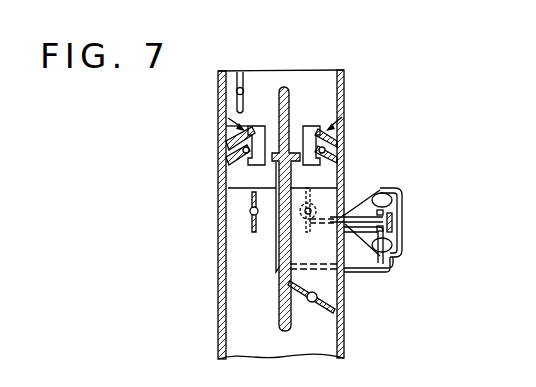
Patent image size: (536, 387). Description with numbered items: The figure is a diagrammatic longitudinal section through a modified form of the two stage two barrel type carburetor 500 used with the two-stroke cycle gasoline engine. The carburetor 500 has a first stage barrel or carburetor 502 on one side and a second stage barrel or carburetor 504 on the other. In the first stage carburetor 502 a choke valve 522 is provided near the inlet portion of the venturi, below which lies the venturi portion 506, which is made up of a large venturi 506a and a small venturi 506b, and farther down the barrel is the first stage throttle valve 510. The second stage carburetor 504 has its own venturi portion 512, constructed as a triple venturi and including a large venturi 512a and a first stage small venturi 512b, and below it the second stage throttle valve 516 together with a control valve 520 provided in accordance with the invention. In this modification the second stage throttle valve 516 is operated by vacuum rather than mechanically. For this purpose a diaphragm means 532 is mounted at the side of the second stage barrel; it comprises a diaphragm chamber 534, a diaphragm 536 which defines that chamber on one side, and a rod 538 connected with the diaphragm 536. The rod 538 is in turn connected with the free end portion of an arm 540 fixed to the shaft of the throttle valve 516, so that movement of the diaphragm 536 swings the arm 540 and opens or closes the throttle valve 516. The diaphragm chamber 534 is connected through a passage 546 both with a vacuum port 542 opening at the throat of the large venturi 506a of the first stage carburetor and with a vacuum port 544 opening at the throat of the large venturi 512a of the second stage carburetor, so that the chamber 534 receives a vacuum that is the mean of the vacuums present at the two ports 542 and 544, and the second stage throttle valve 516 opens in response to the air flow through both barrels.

The carburetor 500 is at (352, 76).
The first stage barrel or carburetor 502 is at (256, 86).
The second stage barrel or carburetor 504 is at (307, 86).
The choke valve 522 is at (236, 84).
The venturi portion 506 is at (226, 125).
The small venturi 506b is at (232, 150).
The large venturi 506a is at (230, 172).
The vacuum port 542 is at (232, 184).
The vacuum port 544 is at (289, 140).
The venturi portion 512 is at (345, 113).
The first stage small venturi 512b is at (345, 136).
The large venturi 512a is at (345, 162).
The second stage throttle valve 516 is at (341, 190).
The first stage throttle valve 510 is at (251, 226).
The arm 540 is at (308, 230).
The control valve 520 is at (319, 308).
The diaphragm means 532 is at (405, 213).
The diaphragm chamber 534 is at (398, 197).
The diaphragm 536 is at (403, 247).
The rod 538 is at (367, 245).
The passage 546 is at (360, 272).